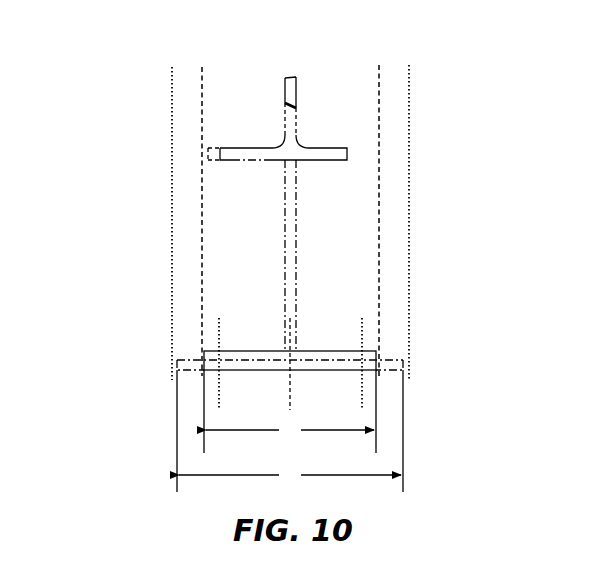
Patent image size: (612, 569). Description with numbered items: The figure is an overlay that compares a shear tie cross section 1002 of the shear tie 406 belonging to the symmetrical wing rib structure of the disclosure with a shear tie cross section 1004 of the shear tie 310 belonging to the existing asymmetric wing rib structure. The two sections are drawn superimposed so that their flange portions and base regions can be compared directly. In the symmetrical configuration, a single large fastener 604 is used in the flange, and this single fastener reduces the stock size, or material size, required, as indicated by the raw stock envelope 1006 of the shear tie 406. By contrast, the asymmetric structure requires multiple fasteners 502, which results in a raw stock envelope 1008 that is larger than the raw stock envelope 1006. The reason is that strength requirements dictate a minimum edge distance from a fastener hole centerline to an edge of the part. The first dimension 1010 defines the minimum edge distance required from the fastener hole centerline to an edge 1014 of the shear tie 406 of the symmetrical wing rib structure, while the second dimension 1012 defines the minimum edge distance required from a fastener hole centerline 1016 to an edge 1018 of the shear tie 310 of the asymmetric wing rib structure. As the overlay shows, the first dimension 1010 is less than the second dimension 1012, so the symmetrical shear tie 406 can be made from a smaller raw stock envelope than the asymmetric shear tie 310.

The shear tie 406 is at (186, 86).
The shear tie cross section 1002 is at (285, 93).
The shear tie 310 is at (184, 124).
The shear tie cross section 1004 is at (220, 148).
The large fastener 604 is at (284, 333).
The fasteners 502 is at (217, 333).
The fastener hole centerline 1016 is at (364, 333).
The edge 1014 is at (377, 352).
The edge 1018 is at (405, 365).
The raw stock envelope 1008 is at (412, 100).
The raw stock envelope 1006 is at (382, 185).
The dimension d1 1010 is at (233, 430).
The dimension d2 1012 is at (345, 475).